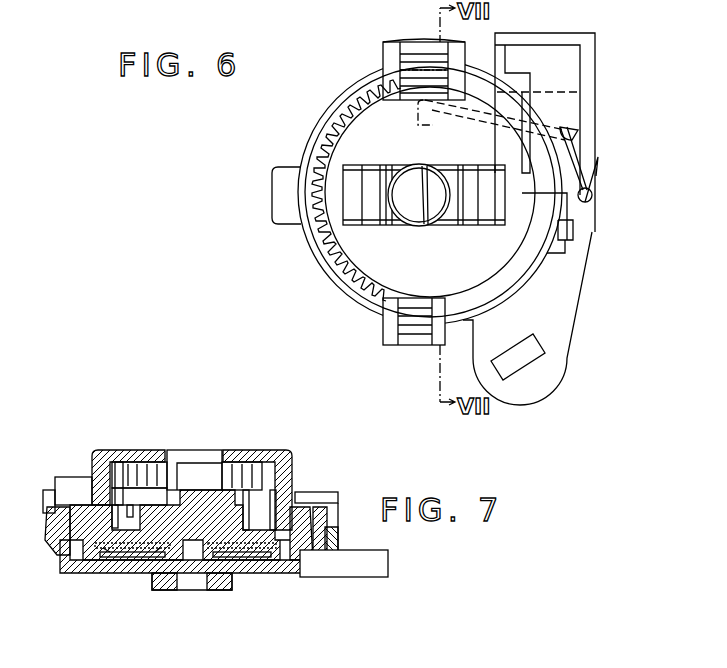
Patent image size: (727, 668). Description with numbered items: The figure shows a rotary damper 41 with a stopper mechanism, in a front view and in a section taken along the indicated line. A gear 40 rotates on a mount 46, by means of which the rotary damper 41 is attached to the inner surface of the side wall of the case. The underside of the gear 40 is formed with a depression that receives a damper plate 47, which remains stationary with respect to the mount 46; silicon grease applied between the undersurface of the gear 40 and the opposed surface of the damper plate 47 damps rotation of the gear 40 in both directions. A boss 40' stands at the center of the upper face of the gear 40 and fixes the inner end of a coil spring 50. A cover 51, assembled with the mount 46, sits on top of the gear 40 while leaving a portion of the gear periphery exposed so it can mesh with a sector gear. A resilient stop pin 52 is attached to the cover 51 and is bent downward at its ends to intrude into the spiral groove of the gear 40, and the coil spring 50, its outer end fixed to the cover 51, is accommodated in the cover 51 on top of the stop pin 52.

In FIG. 6, the gear 40 is at (406, 192).
In FIG. 7, the gear 40 is at (202, 503).
In FIG. 6, the boss 40' is at (416, 225).
In FIG. 7, the boss 40' is at (206, 442).
In FIG. 6, the rotary damper 41 is at (338, 86).
In FIG. 7, the rotary damper 41 is at (265, 585).
In FIG. 6, the mount 46 is at (562, 336).
In FIG. 7, the mount 46 is at (103, 570).
In FIG. 7, the damper plate 47 is at (137, 557).
In FIG. 6, the coil spring 50 is at (478, 200).
In FIG. 7, the coil spring 50 is at (152, 472).
In FIG. 6, the cover 51 is at (350, 152).
In FIG. 7, the cover 51 is at (92, 465).
In FIG. 6, the resilient stop pin 52 is at (418, 118).
In FIG. 7, the resilient stop pin 52 is at (127, 495).